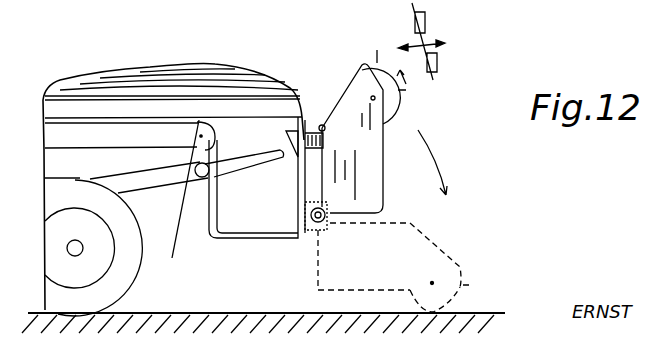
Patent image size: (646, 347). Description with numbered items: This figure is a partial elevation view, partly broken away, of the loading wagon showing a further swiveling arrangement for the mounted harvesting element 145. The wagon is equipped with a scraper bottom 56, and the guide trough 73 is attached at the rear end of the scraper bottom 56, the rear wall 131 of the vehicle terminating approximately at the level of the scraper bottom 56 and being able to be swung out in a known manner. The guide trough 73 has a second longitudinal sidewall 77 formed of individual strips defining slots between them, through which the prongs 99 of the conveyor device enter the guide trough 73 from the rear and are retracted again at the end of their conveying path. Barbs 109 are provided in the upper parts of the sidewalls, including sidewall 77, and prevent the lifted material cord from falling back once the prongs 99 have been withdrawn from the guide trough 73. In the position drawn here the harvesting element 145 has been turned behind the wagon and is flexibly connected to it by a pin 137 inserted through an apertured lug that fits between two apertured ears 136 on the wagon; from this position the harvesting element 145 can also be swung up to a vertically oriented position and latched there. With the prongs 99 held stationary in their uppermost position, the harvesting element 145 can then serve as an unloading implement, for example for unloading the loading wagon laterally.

The scraper bottom 56 is at (181, 202).
The second longitudinal sidewall 77 is at (210, 178).
The prongs 99 is at (218, 240).
The guide trough 73 is at (247, 208).
The barbs 109 is at (298, 117).
The harvesting element 145 is at (417, 105).
The rear wall 131 is at (425, 23).
The apertured ears 136 is at (306, 232).
The pin 137 is at (320, 226).